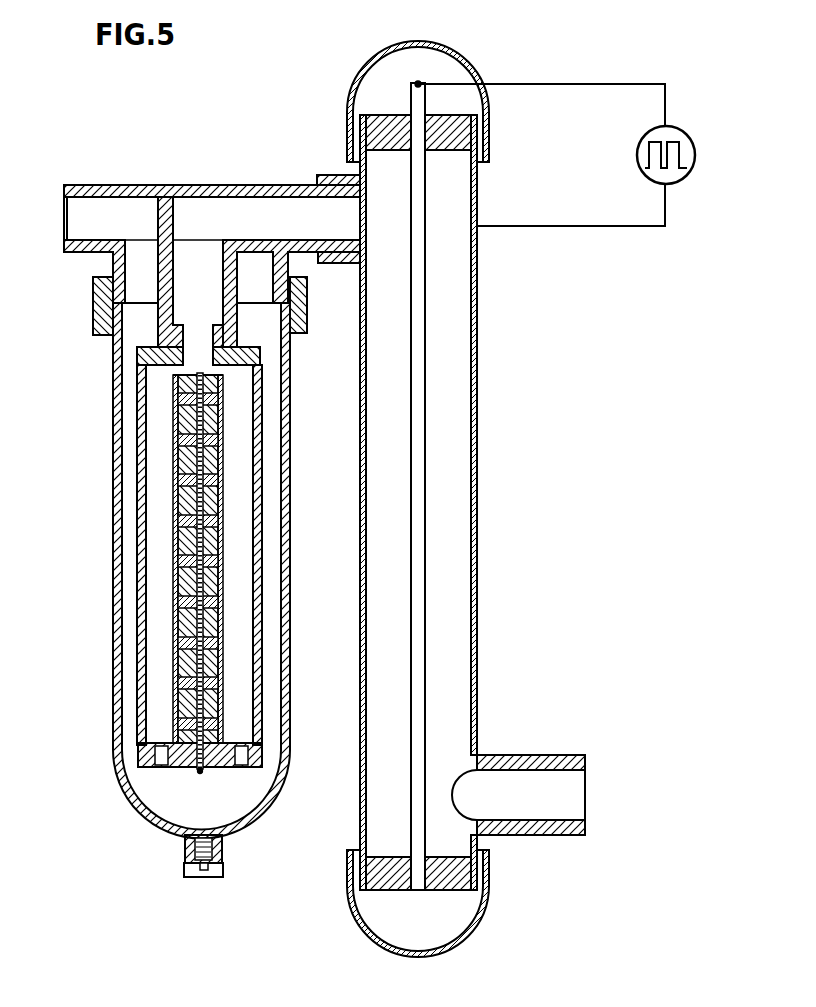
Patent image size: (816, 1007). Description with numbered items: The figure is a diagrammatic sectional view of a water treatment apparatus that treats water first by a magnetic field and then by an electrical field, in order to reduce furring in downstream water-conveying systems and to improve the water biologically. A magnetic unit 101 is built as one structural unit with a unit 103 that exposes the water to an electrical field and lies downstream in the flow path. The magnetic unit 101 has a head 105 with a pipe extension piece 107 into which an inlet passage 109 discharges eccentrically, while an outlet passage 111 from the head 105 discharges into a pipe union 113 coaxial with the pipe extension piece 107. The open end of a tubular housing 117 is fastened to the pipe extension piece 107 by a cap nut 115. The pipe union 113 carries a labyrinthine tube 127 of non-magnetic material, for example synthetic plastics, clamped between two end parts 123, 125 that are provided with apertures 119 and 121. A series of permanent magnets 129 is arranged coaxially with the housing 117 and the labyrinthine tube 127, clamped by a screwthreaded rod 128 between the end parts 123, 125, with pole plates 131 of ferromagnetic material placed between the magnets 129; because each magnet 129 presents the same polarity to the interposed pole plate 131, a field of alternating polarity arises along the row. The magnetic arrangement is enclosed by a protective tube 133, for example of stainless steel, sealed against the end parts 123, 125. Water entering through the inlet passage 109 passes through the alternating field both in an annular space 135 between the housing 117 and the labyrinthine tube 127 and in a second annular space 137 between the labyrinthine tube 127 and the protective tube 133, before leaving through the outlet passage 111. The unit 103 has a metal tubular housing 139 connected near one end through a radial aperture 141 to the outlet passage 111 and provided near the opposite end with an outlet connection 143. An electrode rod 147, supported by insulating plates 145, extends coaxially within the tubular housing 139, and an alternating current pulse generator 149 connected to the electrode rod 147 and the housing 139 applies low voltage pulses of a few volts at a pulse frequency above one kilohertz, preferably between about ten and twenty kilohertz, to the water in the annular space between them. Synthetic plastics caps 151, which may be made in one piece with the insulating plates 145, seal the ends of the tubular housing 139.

The magnetic unit 101 is at (126, 824).
The unit exposing the water to an electrical field 103 is at (512, 440).
The head 105 is at (190, 212).
The pipe extension piece 107 is at (112, 268).
The inlet passage 109 is at (88, 210).
The outlet passage 111 is at (278, 208).
The pipe union 113 is at (157, 325).
The cap nut 115 is at (95, 306).
The tubular housing 117 is at (117, 545).
The aperture 119 is at (225, 370).
The aperture 121 is at (158, 760).
The end part 123 is at (140, 358).
The end part 125 is at (222, 760).
The labyrinthine tube 127 is at (142, 628).
The screwthreaded rod 128 is at (222, 456).
The permanent magnets 129 is at (185, 458).
The pole plates 131 is at (185, 517).
The protective tube 133 is at (225, 572).
The annular space 135 is at (128, 648).
The second annular space 137 is at (155, 683).
The tubular housing 139 is at (477, 384).
The radial aperture 141 is at (358, 212).
The outlet connection 143 is at (555, 835).
The insulating plates 145 is at (385, 118).
The electrode rod 147 is at (430, 265).
The alternating current pulse generator 149 is at (685, 134).
The synthetic plastics caps 151 is at (468, 62).